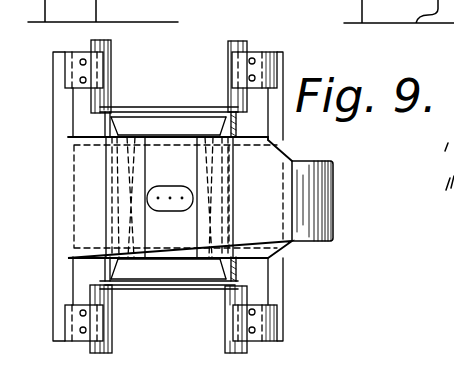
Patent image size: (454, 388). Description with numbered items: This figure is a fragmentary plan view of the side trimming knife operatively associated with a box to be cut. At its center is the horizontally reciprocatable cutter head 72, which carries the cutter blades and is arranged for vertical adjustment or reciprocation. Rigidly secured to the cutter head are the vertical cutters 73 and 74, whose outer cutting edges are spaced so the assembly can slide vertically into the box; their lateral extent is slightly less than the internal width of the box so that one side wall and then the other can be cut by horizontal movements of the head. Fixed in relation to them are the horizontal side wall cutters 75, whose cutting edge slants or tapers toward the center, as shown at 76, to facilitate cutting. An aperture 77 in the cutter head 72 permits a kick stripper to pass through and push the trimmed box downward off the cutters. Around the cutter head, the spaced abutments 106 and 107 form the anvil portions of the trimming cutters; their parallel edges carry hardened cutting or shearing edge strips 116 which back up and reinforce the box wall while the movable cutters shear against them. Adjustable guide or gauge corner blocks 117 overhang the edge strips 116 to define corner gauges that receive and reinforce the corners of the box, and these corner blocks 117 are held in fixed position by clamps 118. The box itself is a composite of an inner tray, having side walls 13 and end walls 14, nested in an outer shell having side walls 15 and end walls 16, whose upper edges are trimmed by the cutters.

The side walls 13 is at (107, 137).
The end walls 14 is at (205, 112).
The side walls 15 is at (105, 125).
The end walls 16 is at (192, 107).
The cutter head 72 is at (180, 197).
The vertical cutter 73 is at (162, 118).
The vertical cutter 74 is at (175, 280).
The horizontal side wall cutter 75 is at (127, 120).
The tapered cutting edge 76 is at (210, 215).
The aperture 77 is at (183, 180).
The abutment 106 is at (283, 138).
The abutment 107 is at (56, 124).
The hardened edge strips 116 is at (90, 268).
The corner blocks 117 is at (111, 43).
The clamps 118 is at (82, 61).